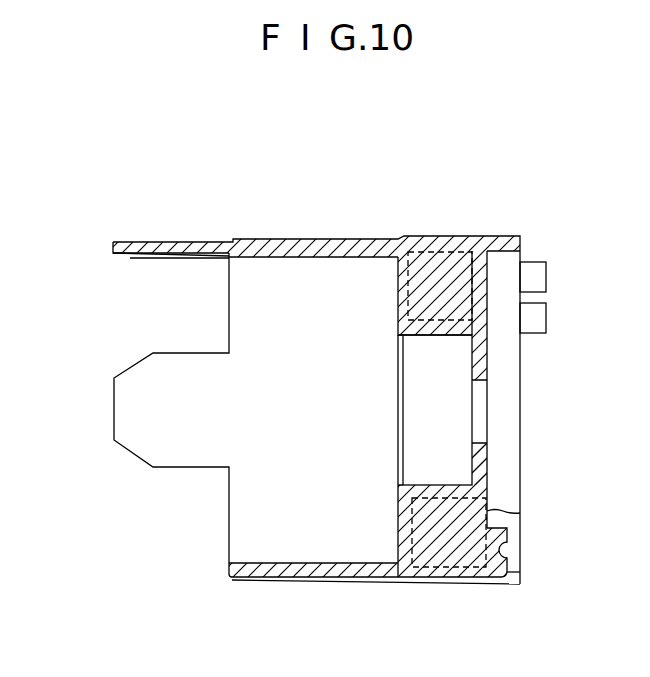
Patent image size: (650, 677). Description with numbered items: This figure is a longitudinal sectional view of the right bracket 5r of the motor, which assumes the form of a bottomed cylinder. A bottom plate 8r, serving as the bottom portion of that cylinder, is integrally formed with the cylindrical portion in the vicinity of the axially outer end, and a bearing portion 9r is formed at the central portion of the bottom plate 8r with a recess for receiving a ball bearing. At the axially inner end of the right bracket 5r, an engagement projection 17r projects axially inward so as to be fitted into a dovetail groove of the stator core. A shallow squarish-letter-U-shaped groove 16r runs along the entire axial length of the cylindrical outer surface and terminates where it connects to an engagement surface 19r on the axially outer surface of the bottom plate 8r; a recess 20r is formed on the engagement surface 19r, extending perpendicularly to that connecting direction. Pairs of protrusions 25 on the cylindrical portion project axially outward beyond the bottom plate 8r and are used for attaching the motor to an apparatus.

The right bracket 5r is at (343, 212).
The bottom plate 8r is at (418, 286).
The bearing portion 9r is at (480, 355).
The squarish-letter-U-shaped groove 16r is at (440, 582).
The engagement projection 17r is at (188, 240).
The engagement surface 19r is at (508, 574).
The recess 20r is at (505, 548).
The protrusions 25 is at (546, 317).